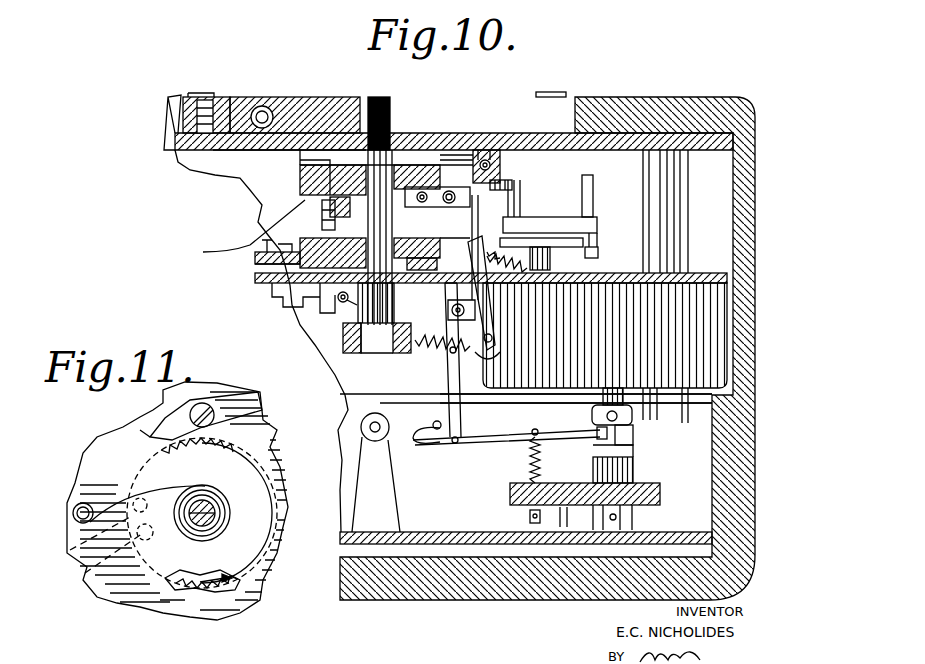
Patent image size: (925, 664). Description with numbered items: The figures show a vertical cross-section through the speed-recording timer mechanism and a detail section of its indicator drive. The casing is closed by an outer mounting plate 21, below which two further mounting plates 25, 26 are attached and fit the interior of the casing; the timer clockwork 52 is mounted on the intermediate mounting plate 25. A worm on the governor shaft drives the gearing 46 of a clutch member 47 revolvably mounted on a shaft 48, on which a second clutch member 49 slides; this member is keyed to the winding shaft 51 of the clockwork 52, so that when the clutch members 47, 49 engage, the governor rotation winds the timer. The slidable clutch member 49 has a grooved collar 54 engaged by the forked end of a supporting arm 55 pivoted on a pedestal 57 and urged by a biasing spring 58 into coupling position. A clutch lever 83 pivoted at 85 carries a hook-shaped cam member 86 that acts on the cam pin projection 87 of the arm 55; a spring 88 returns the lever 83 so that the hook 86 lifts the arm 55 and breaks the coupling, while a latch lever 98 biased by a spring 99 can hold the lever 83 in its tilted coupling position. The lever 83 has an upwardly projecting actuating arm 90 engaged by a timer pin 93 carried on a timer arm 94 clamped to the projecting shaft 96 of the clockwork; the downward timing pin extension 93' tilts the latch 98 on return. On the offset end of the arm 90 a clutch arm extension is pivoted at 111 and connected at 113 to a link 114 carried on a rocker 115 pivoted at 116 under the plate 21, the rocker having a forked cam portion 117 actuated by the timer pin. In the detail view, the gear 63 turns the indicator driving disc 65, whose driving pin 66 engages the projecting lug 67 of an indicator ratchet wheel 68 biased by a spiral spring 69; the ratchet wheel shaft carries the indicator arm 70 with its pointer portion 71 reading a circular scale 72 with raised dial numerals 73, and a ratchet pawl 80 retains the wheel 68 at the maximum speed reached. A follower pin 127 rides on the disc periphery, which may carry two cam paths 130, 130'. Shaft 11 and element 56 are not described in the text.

In FIG. 10, the shaft 11 is at (428, 146).
In FIG. 10, the mounting plate 21 is at (176, 138).
In FIG. 10, the intermediate mounting plate 25 is at (262, 282).
In FIG. 10, the mounting plate 26 is at (340, 535).
In FIG. 10, the gearing 46 is at (660, 497).
In FIG. 10, the clutch member 47 is at (634, 470).
In FIG. 10, the shaft 48 is at (626, 450).
In FIG. 10, the clutch member 49 is at (634, 432).
In FIG. 10, the winding shaft 51 is at (640, 398).
In FIG. 10, the clockwork 52 is at (718, 323).
In FIG. 10, the grooved collar 54 is at (605, 398).
In FIG. 10, the supporting arm 55 is at (556, 427).
In FIG. 10, the pulley 56 is at (361, 427).
In FIG. 10, the pedestal 57 is at (385, 496).
In FIG. 10, the biasing spring 58 is at (529, 456).
In FIG. 10, the gear 63 is at (344, 340).
In FIG. 11, the indicator driving disc 65 is at (168, 590).
In FIG. 10, the driving pin 66 is at (323, 212).
In FIG. 11, the driving pin 66 is at (92, 580).
In FIG. 10, the projecting lug 67 is at (294, 240).
In FIG. 11, the projecting lug 67 is at (70, 552).
In FIG. 10, the indicator ratchet wheel 68 is at (300, 180).
In FIG. 11, the indicator ratchet wheel 68 is at (210, 453).
In FIG. 10, the spiral spring 69 is at (287, 160).
In FIG. 11, the spiral spring 69 is at (196, 490).
In FIG. 10, the indicator arm 70 is at (560, 115).
In FIG. 10, the pointer portion 71 is at (281, 100).
In FIG. 10, the circular scale 72 is at (220, 100).
In FIG. 10, the dial numerals 73 is at (203, 97).
In FIG. 11, the ratchet pawl 80 is at (150, 412).
In FIG. 10, the clutch lever 83 is at (452, 372).
In FIG. 10, the pivot 85 is at (452, 310).
In FIG. 10, the hook-shaped cam member 86 is at (456, 444).
In FIG. 10, the cam pin projection 87 is at (436, 432).
In FIG. 10, the spring 88 is at (435, 346).
In FIG. 10, the actuating arm 90 is at (480, 226).
In FIG. 10, the timer pin 93 is at (606, 194).
In FIG. 10, the timing pin extension 93' is at (609, 245).
In FIG. 10, the timer arm 94 is at (560, 226).
In FIG. 10, the projecting shaft 96 is at (528, 238).
In FIG. 10, the latch lever 98 is at (482, 356).
In FIG. 10, the spring 99 is at (496, 282).
In FIG. 10, the pivot 111 is at (450, 205).
In FIG. 10, the pivotal connection 113 is at (422, 204).
In FIG. 10, the link 114 is at (466, 158).
In FIG. 10, the rocker 115 is at (491, 165).
In FIG. 10, the pivot 116 is at (492, 150).
In FIG. 10, the forked cam portion 117 is at (513, 184).
In FIG. 10, the follower pin 127 is at (283, 301).
In FIG. 10, the cam path 130 is at (273, 132).
In FIG. 10, the cam path 130' is at (487, 290).